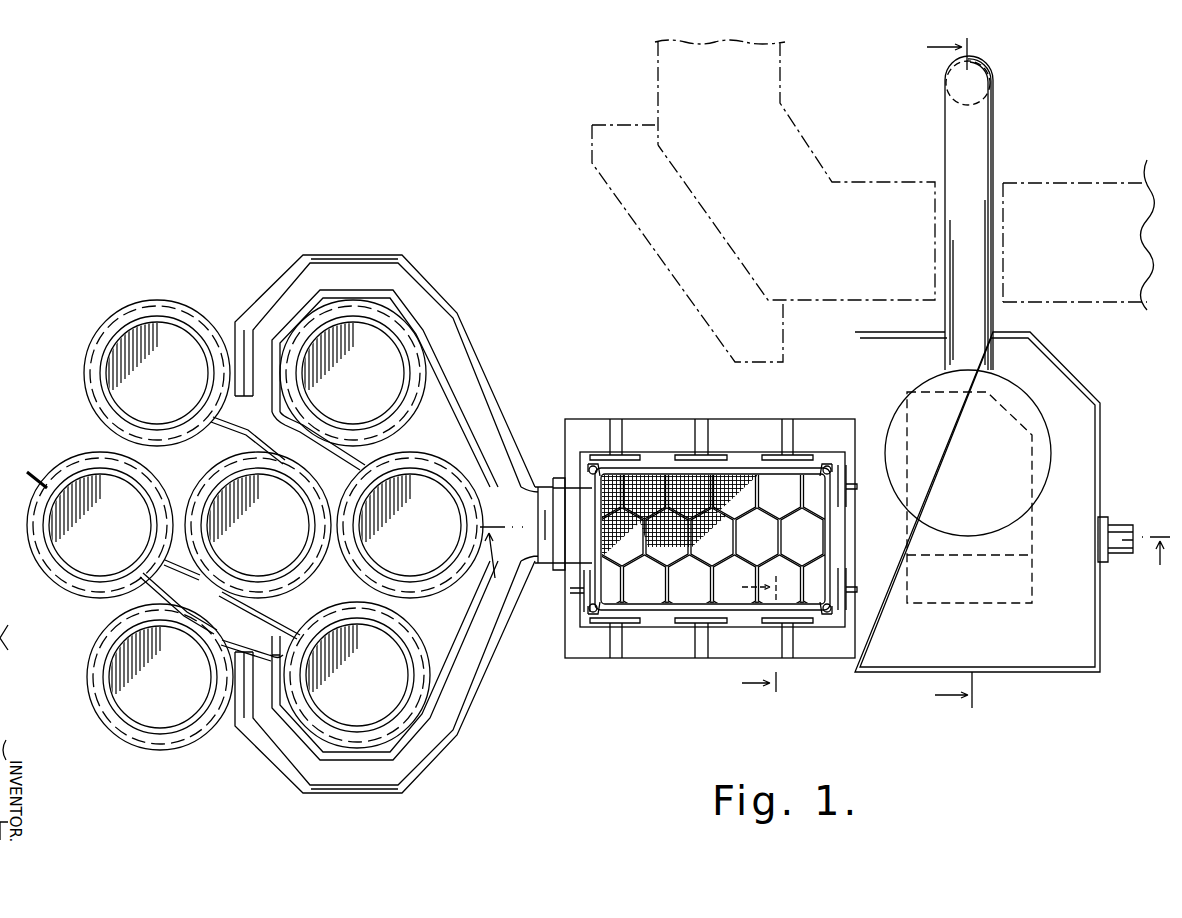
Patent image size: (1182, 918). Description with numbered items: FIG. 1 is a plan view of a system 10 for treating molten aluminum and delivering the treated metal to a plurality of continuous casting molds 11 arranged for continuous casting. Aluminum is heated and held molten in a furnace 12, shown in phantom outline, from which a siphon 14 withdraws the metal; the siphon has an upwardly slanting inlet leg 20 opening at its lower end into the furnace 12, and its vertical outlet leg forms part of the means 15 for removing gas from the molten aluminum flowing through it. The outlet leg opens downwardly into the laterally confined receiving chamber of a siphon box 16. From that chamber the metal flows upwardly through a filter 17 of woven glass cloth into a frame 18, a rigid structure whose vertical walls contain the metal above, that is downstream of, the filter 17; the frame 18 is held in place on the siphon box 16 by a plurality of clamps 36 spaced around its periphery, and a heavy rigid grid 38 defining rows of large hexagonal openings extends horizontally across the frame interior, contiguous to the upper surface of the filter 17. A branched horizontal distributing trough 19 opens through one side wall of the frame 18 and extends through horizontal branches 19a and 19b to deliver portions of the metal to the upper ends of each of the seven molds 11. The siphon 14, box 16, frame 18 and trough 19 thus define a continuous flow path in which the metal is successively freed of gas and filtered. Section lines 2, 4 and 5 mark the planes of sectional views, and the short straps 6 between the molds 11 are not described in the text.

The section line 2- 2 is at (937, 373).
The section line 4- 4 is at (825, 564).
The section line 5- 5 is at (748, 636).
The connecting strap 6 is at (27, 487).
The system 10 is at (648, 386).
The continuous casting molds 11 is at (368, 672).
The furnace 12 is at (877, 183).
The siphon 14 is at (1000, 213).
The means for removing gas 15 is at (1022, 388).
The siphon box 16 is at (1030, 672).
The filter 17 is at (710, 553).
The frame 18 is at (637, 597).
The distributing trough 19 is at (400, 524).
The horizontal branch 19a is at (481, 381).
The horizontal branch 19b is at (447, 690).
The inlet leg 20 is at (990, 277).
The clamps 36 is at (613, 432).
The grid 38 is at (798, 587).